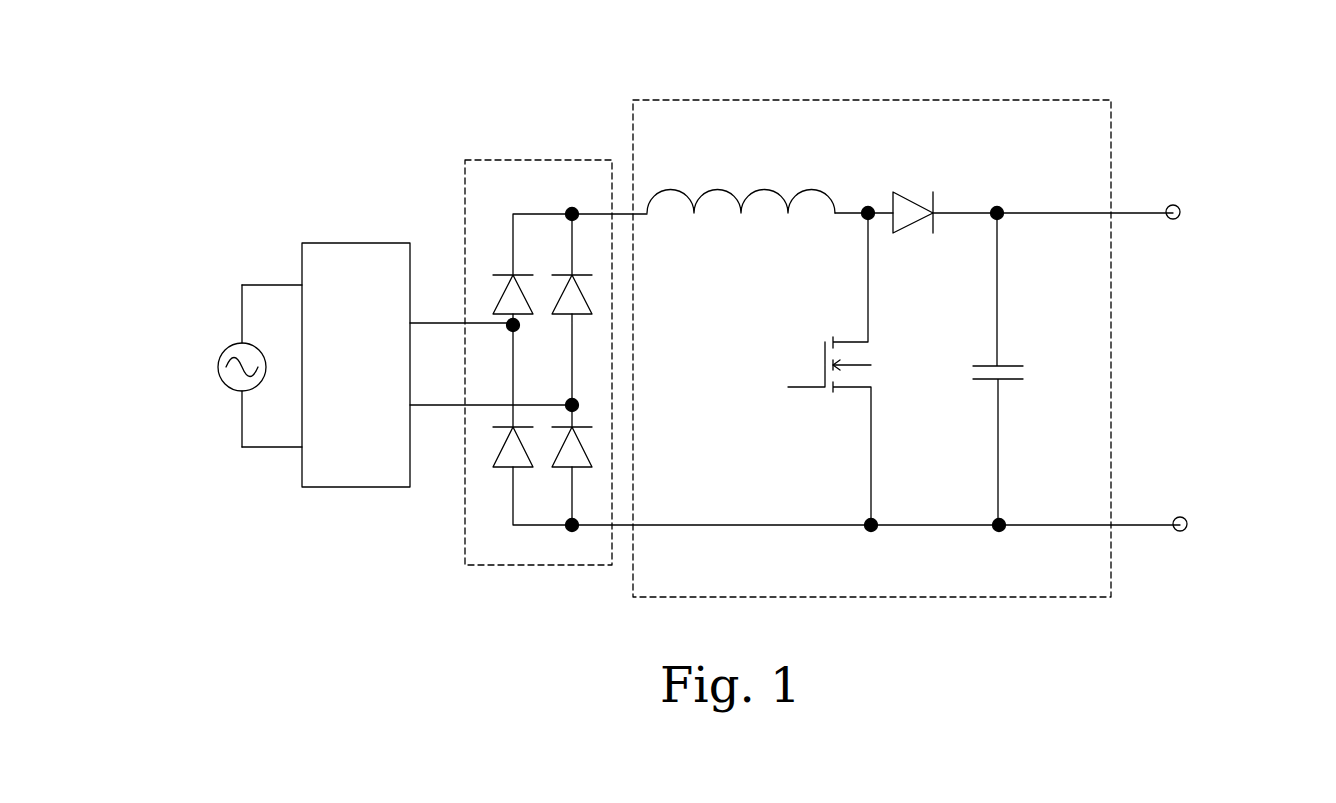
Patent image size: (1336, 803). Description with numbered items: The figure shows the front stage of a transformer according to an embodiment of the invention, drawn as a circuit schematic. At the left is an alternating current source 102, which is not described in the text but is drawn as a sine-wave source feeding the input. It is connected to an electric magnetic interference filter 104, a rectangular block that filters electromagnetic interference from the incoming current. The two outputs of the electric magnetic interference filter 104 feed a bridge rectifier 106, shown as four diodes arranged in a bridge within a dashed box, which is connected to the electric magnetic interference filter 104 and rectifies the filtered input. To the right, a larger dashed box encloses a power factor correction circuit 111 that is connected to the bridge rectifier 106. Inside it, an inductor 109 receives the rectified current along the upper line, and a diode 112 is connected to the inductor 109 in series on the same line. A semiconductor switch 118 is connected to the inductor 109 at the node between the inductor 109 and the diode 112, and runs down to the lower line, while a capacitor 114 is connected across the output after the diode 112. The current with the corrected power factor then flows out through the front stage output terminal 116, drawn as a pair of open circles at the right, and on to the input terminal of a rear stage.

The AC power source 102 is at (222, 352).
The electric magnetic interference filter 104 is at (335, 243).
The bridge rectifier 106 is at (521, 159).
The inductor 109 is at (772, 185).
The power factor correction circuit 111 is at (792, 100).
The diode 112 is at (918, 197).
The capacitor 114 is at (998, 363).
The front stage output terminal 116 is at (1175, 320).
The semiconductor switch 118 is at (874, 358).